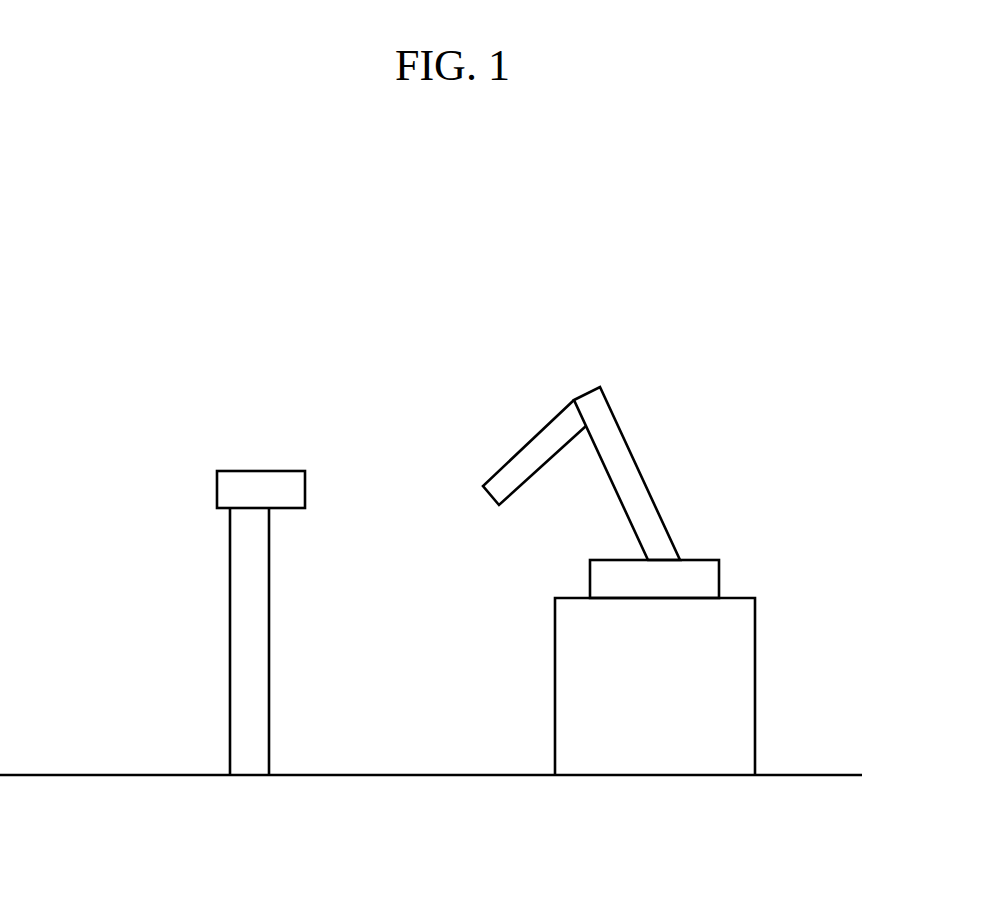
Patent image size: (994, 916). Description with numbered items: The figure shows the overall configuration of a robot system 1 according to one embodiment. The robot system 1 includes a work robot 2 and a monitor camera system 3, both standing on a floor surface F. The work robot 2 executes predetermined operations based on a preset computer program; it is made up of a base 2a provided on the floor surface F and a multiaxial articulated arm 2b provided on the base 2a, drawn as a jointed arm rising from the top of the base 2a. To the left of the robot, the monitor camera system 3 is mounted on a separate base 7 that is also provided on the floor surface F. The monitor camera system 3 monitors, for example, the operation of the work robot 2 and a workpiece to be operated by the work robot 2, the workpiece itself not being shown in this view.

The robot system 1 is at (331, 310).
The work robot 2 is at (668, 486).
The base 2a is at (756, 661).
The multiaxial articulated arm 2b is at (617, 420).
The monitor camera system 3 is at (222, 458).
The base 7 is at (228, 592).
The floor surface F is at (80, 773).